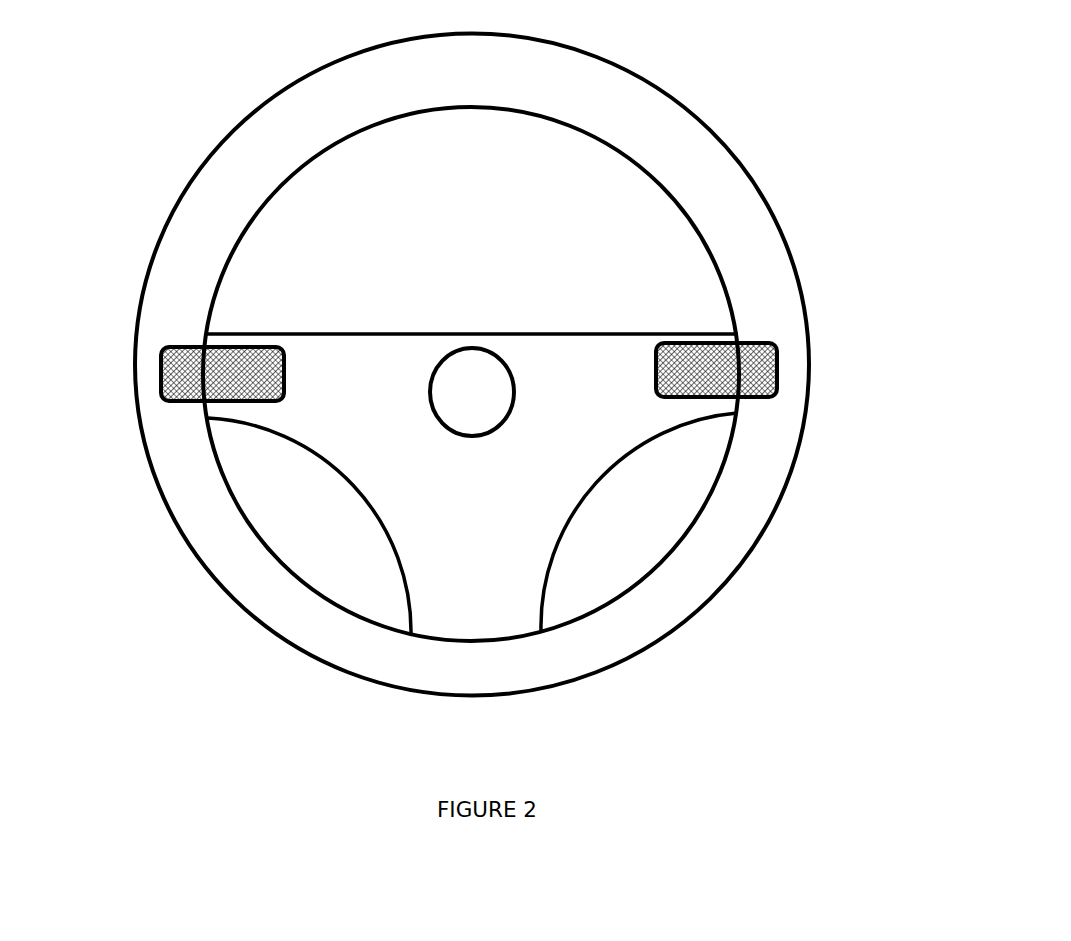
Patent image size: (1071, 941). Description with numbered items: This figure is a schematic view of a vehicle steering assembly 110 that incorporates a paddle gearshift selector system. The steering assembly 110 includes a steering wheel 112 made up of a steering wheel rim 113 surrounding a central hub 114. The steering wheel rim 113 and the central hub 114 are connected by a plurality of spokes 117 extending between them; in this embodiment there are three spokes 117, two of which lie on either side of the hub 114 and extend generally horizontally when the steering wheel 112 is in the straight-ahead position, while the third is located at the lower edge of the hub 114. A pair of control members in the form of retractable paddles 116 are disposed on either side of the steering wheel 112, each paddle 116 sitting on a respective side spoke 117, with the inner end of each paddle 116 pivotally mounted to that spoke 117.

The vehicle steering assembly 110 is at (490, 384).
The steering wheel 112 is at (850, 535).
The steering wheel rim 113 is at (687, 600).
The central hub 114 is at (505, 335).
The retractable paddles 116 is at (187, 372).
The spokes 117 is at (240, 333).